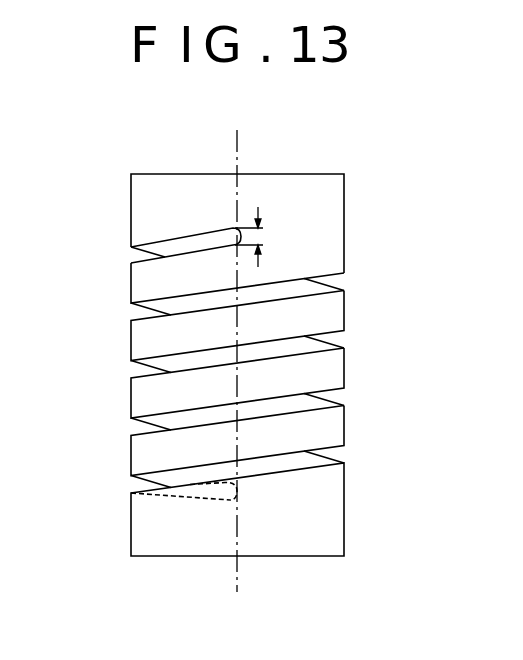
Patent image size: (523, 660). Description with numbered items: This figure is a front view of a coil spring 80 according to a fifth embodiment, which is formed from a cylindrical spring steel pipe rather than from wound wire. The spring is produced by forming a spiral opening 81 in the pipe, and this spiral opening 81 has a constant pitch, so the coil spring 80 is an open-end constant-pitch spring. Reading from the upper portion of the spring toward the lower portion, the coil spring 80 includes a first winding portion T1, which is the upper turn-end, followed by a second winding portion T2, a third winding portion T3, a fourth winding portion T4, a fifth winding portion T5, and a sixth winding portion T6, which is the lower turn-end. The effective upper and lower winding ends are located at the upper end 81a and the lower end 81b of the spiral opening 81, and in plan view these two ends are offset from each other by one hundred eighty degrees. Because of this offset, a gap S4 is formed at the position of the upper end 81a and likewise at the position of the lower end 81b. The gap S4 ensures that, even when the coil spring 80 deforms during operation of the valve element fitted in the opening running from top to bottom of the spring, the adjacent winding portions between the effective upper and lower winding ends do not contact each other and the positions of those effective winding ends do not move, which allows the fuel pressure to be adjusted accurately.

The coil spring 80 is at (121, 171).
The spiral opening 81 is at (131, 315).
The upper end of the spiral opening 81a is at (238, 232).
The lower end of the spiral opening 81b is at (237, 491).
The first winding portion T1 is at (237, 223).
The second winding portion T2 is at (237, 288).
The third winding portion T3 is at (237, 326).
The fourth winding portion T4 is at (237, 383).
The fifth winding portion T5 is at (237, 441).
The sixth winding portion T6 is at (203, 497).
The gap S4 is at (264, 237).